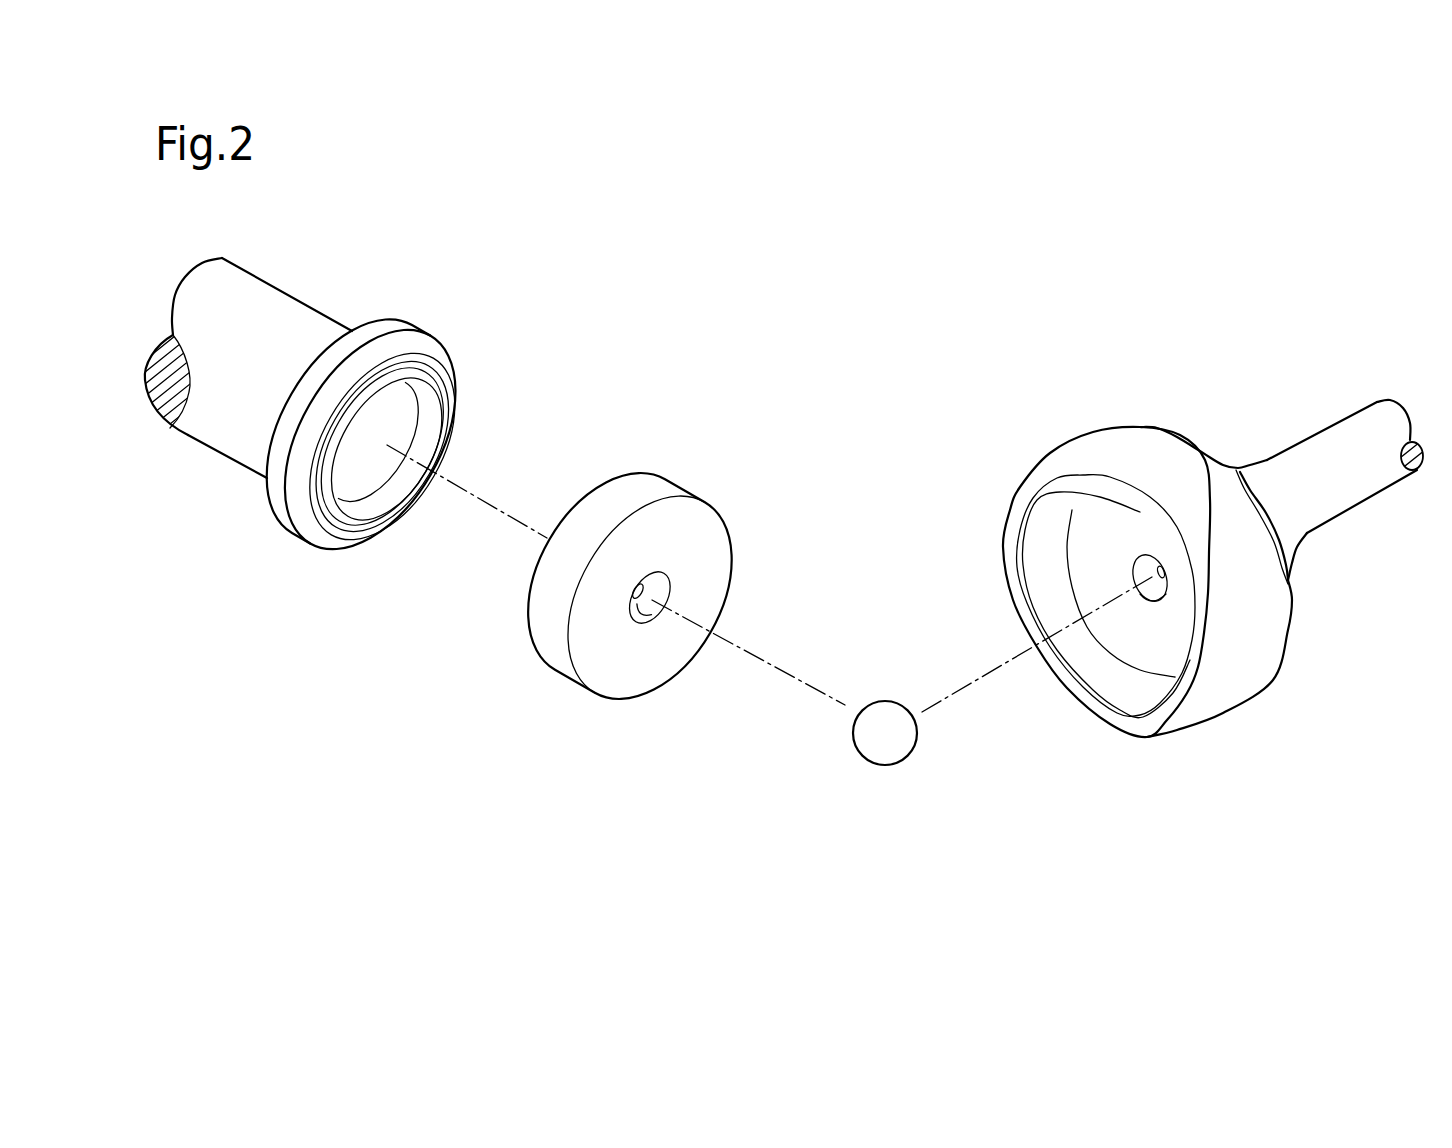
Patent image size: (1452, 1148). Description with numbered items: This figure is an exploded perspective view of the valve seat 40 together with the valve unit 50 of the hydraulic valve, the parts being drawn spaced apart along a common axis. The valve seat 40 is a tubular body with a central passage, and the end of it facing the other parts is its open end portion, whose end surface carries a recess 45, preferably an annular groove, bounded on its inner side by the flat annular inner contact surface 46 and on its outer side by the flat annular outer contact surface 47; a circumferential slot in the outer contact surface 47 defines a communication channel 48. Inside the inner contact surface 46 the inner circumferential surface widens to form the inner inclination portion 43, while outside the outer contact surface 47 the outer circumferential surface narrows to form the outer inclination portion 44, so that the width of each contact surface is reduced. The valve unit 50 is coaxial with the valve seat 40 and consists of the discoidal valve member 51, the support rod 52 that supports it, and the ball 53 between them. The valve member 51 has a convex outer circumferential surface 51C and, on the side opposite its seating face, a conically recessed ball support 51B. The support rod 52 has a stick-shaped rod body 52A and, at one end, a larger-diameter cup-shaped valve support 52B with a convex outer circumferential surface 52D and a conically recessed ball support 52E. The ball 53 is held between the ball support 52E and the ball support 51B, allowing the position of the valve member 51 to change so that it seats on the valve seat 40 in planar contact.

The valve seat 40 is at (298, 258).
The inner inclination portion 43 is at (423, 430).
The outer inclination portion 44 is at (305, 518).
The recess 45 is at (455, 388).
The inner contact surface 46 is at (441, 407).
The outer contact surface 47 is at (343, 547).
The communication channel 48 is at (392, 530).
The valve unit 50 is at (734, 820).
The valve member 51 is at (730, 543).
The ball support 51B is at (663, 617).
The outer circumferential surface 51C is at (640, 487).
The support rod 52 is at (1286, 416).
The rod body 52A is at (1363, 487).
The valve support 52B is at (1268, 680).
The outer circumferential surface 52D is at (1273, 623).
The ball support 52E is at (1152, 577).
The ball 53 is at (878, 702).